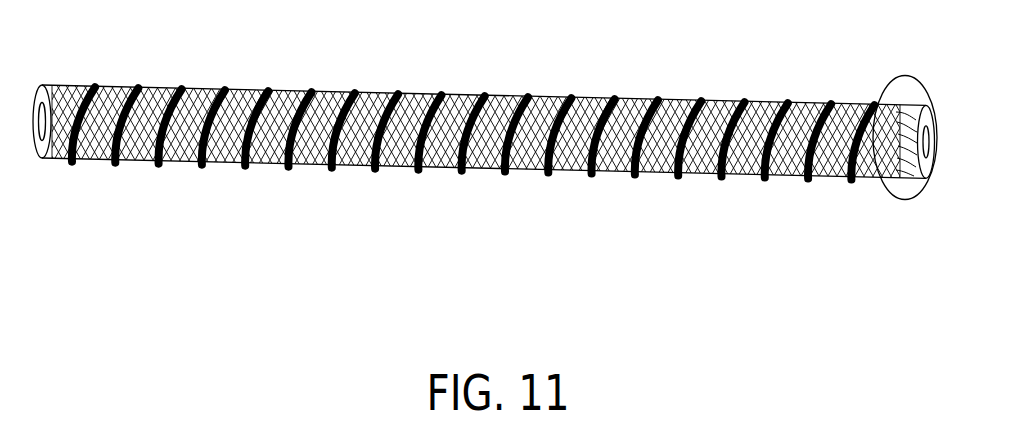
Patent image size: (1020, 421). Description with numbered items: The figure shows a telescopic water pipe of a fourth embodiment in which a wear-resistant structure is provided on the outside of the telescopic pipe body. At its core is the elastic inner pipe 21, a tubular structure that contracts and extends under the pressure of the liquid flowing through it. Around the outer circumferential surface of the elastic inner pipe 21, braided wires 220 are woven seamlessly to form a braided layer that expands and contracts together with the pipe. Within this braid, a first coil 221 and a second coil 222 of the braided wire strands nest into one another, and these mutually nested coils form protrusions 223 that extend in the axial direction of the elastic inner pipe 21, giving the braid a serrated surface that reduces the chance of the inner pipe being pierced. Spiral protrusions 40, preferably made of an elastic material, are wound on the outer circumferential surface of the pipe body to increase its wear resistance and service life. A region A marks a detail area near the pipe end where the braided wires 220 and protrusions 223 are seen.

The elastic inner pipe 21 is at (914, 180).
The spiral protrusions 40 is at (706, 98).
The braided wires 220 is at (476, 107).
The first coil 221 is at (872, 108).
The second coil 222 is at (856, 108).
The protrusions 223 is at (833, 178).
The detail region A is at (873, 183).